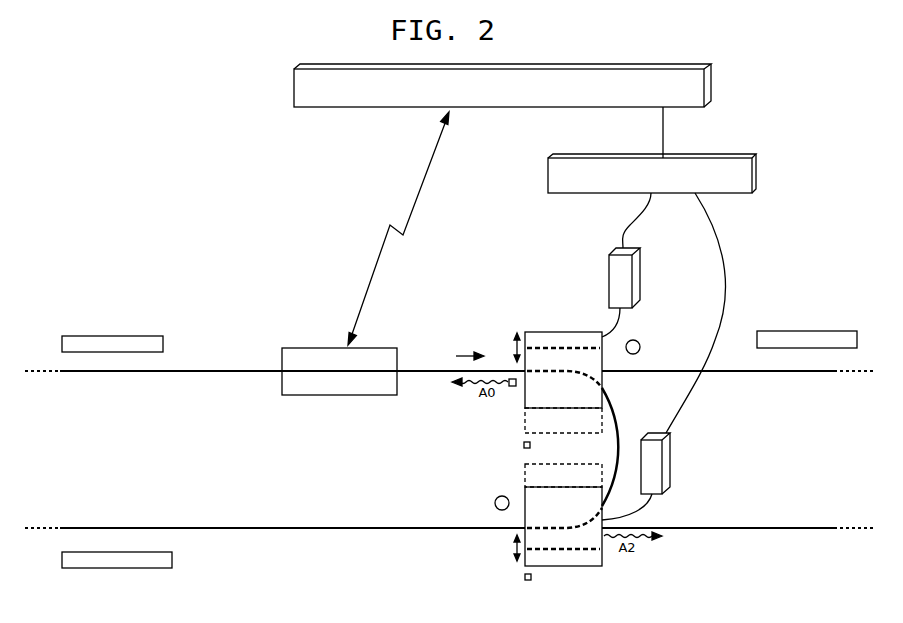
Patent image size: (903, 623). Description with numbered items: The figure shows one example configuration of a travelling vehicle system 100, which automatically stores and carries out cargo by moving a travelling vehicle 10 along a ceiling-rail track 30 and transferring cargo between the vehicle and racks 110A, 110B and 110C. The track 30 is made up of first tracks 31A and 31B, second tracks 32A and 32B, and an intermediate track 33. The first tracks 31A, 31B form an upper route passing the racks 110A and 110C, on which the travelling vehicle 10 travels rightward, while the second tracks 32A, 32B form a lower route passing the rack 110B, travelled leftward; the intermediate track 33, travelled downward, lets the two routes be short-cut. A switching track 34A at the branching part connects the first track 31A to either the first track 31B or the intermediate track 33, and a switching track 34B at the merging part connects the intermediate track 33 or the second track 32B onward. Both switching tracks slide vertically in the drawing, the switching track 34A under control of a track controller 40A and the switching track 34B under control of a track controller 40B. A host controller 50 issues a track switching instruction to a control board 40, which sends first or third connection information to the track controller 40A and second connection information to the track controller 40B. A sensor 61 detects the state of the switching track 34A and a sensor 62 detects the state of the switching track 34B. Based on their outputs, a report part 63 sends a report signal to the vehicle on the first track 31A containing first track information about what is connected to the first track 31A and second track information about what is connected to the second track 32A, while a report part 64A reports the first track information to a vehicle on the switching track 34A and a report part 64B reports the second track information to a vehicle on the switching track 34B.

The travelling vehicle system 100 is at (585, 49).
The host controller 50 is at (710, 81).
The control board 40 is at (756, 172).
The track controller 40A is at (640, 277).
The track controller 40B is at (670, 461).
The travelling vehicle 10 is at (383, 348).
The sensor 61 is at (640, 345).
The sensor 62 is at (496, 499).
The report part 63 is at (512, 386).
The report part 64A is at (523, 445).
The report part 64B is at (523, 577).
The track 30 is at (449, 468).
The first track 31A is at (95, 372).
The first track 31B is at (781, 372).
The second track 32A is at (418, 529).
The second track 32B is at (781, 529).
The intermediate track 33 is at (610, 412).
The switching track 34A is at (550, 332).
The switching track 34B is at (583, 566).
The rack 110A is at (128, 336).
The rack 110B is at (128, 568).
The rack 110C is at (823, 331).